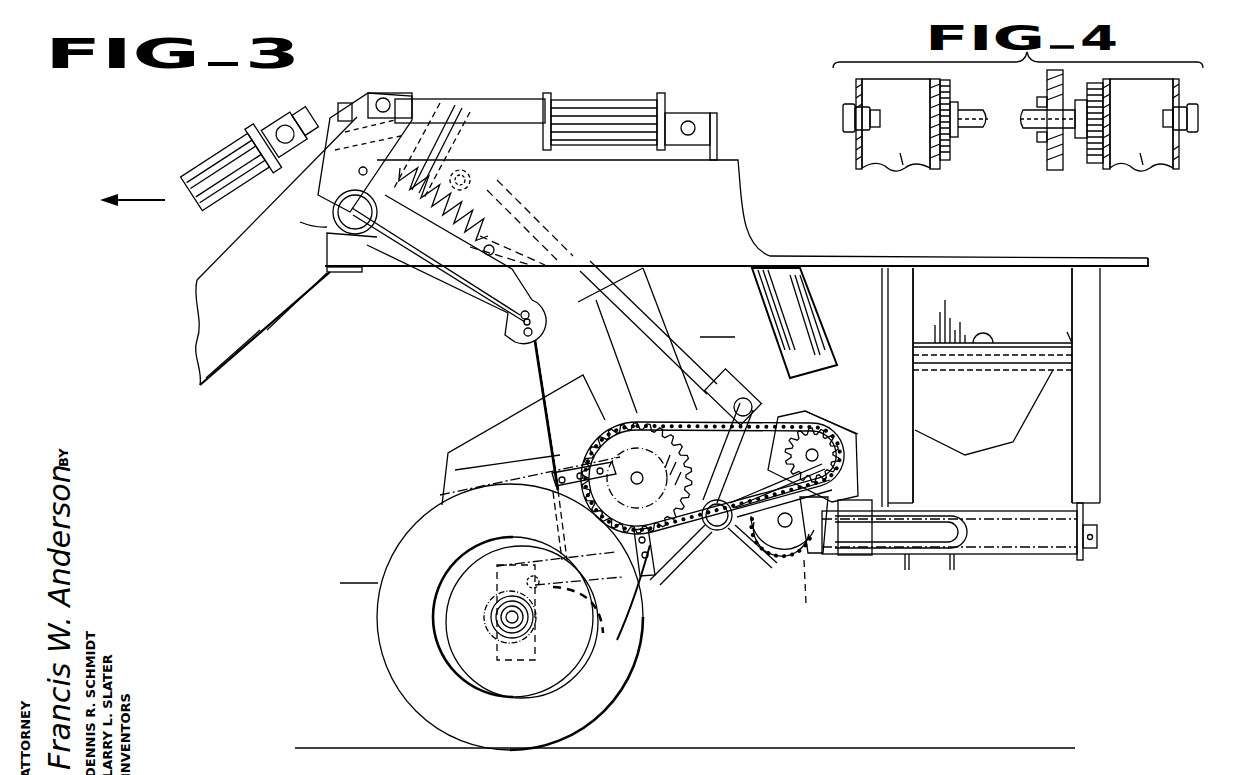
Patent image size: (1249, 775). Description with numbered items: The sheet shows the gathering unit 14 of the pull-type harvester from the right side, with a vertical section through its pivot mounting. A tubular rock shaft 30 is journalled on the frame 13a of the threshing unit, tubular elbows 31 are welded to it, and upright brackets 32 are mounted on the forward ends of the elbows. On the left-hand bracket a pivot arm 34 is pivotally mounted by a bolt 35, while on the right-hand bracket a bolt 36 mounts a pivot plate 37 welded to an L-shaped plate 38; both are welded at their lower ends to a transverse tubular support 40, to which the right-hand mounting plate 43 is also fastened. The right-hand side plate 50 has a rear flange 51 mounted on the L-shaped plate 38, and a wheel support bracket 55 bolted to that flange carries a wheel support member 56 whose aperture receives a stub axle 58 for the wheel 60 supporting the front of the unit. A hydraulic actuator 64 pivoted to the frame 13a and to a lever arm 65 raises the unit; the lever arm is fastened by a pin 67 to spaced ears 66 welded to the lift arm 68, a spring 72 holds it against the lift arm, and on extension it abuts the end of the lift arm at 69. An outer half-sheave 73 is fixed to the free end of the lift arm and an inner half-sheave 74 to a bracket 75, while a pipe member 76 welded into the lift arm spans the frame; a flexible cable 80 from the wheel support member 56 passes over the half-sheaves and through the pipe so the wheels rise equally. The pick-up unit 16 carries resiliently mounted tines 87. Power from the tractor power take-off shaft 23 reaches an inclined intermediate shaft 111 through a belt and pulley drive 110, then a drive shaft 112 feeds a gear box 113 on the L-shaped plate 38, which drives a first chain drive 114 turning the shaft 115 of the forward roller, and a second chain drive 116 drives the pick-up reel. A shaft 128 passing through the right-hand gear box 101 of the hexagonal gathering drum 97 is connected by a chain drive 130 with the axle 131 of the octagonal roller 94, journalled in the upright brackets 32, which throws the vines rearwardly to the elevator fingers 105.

In FIG. 3, the power take-off shaft 23 is at (225, 157).
In FIG. 3, the lever arm 65 is at (335, 130).
In FIG. 3, the inclined intermediate shaft 111 is at (352, 100).
In FIG. 3, the hydraulic actuator 64 is at (610, 103).
In FIG. 3, the belt and pulley drive 110 is at (428, 137).
In FIG. 3, the spring 72 is at (482, 218).
In FIG. 3, the pin 67 is at (358, 172).
In FIG. 3, the spaced ears 66 is at (330, 200).
In FIG. 3, the lift arm end abutment 69 is at (320, 234).
In FIG. 3, the pipe member 76 is at (325, 262).
In FIG. 3, the bracket 75 is at (370, 232).
In FIG. 3, the inner half-sheave 74 is at (378, 252).
In FIG. 3, the lift arm 68 is at (433, 280).
In FIG. 3, the flexible cable 80 is at (545, 365).
In FIG. 3, the outer half-sheave 73 is at (542, 315).
In FIG. 3, the drive shaft 112 is at (622, 300).
In FIG. 3, the hexagonal gathering drum 97 is at (707, 340).
In FIG. 3, the octagonal roller 94 is at (817, 411).
In FIG. 3, the first chain drive 114 is at (664, 424).
In FIG. 3, the chain drive 130 is at (760, 492).
In FIG. 4, the chain drive 130 is at (1048, 88).
In FIG. 3, the second chain drive 116 is at (573, 467).
In FIG. 3, the right-hand side plate 50 is at (517, 478).
In FIG. 3, the shaft 115 is at (632, 482).
In FIG. 3, the gear box 113 is at (847, 448).
In FIG. 3, the pivot plate 37 is at (852, 468).
In FIG. 4, the pivot plate 37 is at (1180, 165).
In FIG. 3, the tubular elbows 31 is at (928, 530).
In FIG. 3, the elevator fingers 105 is at (970, 460).
In FIG. 3, the pick-up unit 16 is at (377, 575).
In FIG. 3, the tines 87 is at (341, 584).
In FIG. 3, the gathering unit 14 is at (362, 606).
In FIG. 3, the wheel 60 is at (390, 648).
In FIG. 3, the stub axles 58 is at (507, 622).
In FIG. 3, the wheel support member 56 is at (622, 612).
In FIG. 3, the right-hand wheel support bracket 55 is at (660, 620).
In FIG. 3, the rear flange 51 is at (690, 547).
In FIG. 3, the L-shaped plate 38 is at (733, 567).
In FIG. 3, the transverse tubular support 40 is at (722, 531).
In FIG. 3, the right-hand mounting plate 43 is at (770, 567).
In FIG. 3, the shaft 128 is at (787, 565).
In FIG. 3, the right-hand gear box 101 is at (833, 596).
In FIG. 3, the upright brackets 32 is at (838, 560).
In FIG. 4, the upright brackets 32 is at (1017, 144).
In FIG. 3, the tubular rock shaft 30 is at (1030, 542).
In FIG. 3, the frame 13a is at (236, 246).
In FIG. 4, the bolt 35 is at (850, 112).
In FIG. 4, the pivot arm 34 is at (856, 152).
In FIG. 4, the bolt 36 is at (1190, 116).
In FIG. 4, the axle 131 is at (985, 127).